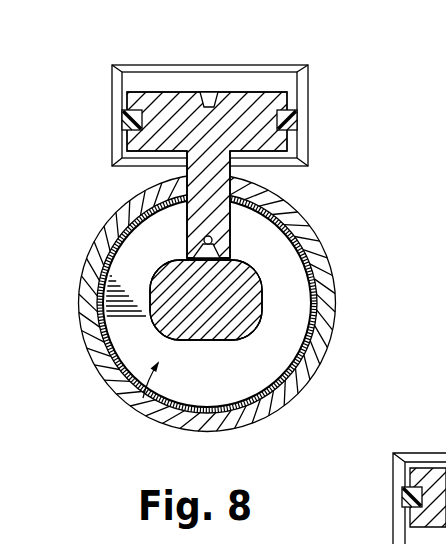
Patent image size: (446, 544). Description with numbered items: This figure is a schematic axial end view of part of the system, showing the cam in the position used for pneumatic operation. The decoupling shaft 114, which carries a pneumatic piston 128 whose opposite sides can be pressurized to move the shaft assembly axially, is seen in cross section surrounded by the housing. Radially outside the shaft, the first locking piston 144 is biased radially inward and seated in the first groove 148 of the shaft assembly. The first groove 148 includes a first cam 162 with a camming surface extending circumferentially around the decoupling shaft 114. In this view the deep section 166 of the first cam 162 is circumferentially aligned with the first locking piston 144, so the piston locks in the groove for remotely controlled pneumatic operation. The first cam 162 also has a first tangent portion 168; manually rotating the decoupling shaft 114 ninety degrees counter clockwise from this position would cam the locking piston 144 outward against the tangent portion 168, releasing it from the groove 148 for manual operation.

The decoupling shaft 114 is at (142, 407).
The piston 128 is at (128, 352).
The first locking piston 144 is at (260, 103).
The first groove 148 is at (243, 257).
The deep section 166 is at (243, 257).
The first cam 162 is at (213, 312).
The first tangent portion 168 is at (262, 297).